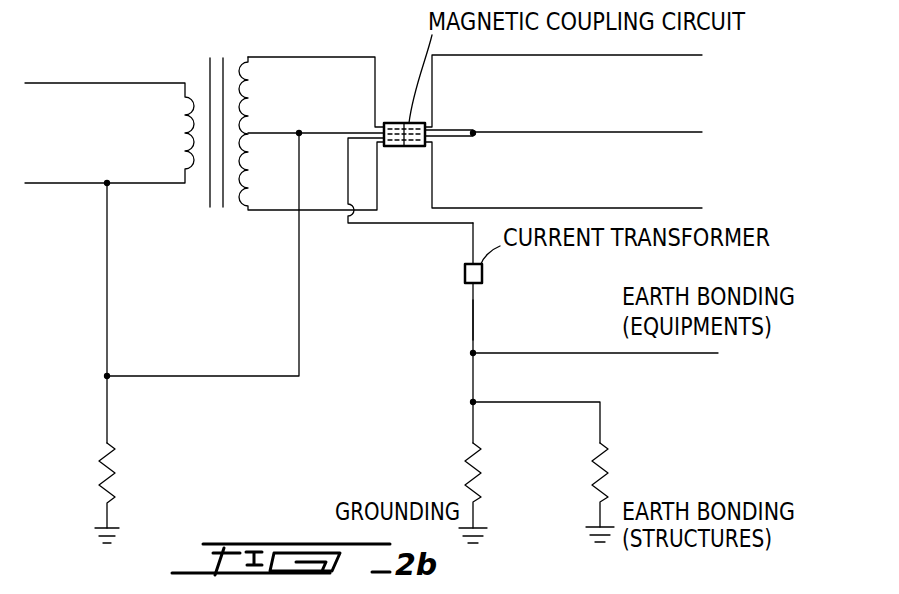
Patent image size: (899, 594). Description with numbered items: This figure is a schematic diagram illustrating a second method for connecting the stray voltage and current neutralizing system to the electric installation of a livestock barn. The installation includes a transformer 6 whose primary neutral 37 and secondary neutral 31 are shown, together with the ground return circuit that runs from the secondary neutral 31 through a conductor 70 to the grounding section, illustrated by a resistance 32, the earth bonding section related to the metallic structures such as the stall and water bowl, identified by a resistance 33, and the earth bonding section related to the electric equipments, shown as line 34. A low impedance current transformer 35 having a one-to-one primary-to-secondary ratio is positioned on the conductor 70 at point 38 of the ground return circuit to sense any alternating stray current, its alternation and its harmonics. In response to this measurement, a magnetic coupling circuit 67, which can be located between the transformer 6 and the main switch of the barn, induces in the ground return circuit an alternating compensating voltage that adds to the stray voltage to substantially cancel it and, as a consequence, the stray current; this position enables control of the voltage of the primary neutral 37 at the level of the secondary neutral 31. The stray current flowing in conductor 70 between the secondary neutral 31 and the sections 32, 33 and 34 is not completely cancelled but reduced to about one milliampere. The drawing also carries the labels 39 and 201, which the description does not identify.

The transformer 6 is at (216, 58).
The secondary neutral 31 is at (473, 131).
The grounding section 32 is at (465, 458).
The earth bonding section related to metallic structures 33 is at (594, 458).
The earth bonding section related to electric equipments 34 is at (622, 353).
The current transformer 35 is at (465, 273).
The primary neutral 37 is at (312, 108).
The point 38 is at (491, 275).
The coupling lead 39 is at (358, 136).
The magnetic coupling circuit 67 is at (397, 123).
The conductor 70 is at (473, 241).
The ground conductor 201 is at (473, 318).